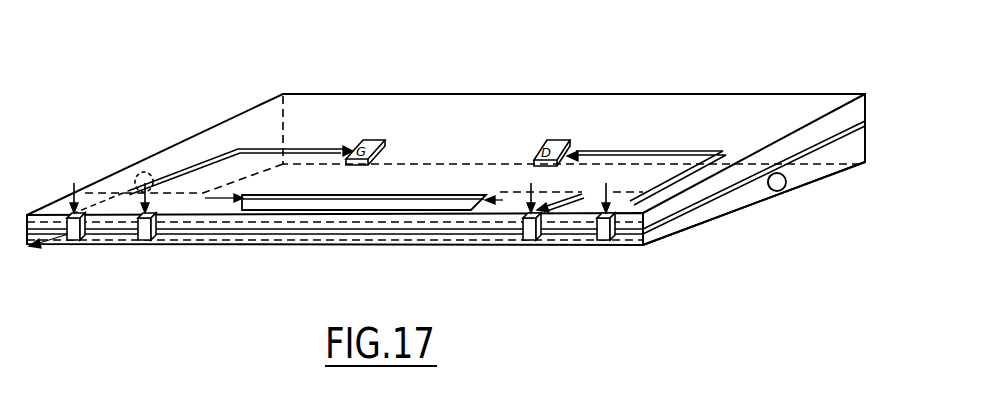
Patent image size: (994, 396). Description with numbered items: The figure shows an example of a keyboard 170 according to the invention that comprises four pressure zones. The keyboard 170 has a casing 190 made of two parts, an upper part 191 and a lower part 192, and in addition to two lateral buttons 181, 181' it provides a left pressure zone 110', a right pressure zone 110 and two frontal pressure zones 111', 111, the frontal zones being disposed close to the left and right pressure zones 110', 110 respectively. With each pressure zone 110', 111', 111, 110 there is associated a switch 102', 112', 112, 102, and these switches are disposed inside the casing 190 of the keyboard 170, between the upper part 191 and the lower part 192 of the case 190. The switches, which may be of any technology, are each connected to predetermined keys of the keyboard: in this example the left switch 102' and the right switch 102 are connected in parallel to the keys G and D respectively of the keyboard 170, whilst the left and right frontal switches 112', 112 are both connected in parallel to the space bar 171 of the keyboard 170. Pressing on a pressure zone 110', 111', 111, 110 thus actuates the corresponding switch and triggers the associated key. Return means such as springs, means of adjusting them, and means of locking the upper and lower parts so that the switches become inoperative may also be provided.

The keyboard 170 is at (744, 88).
The casing 190 is at (811, 110).
The upper part of the casing 191 is at (850, 117).
The lower part of the casing 192 is at (827, 170).
The lateral button 181 is at (786, 219).
The lateral button 181' is at (125, 131).
The space bar 171 is at (375, 200).
The right switch 102 is at (618, 264).
The left switch 102' is at (61, 258).
The right frontal switch 112 is at (517, 256).
The left frontal switch 112' is at (150, 259).
The right pressure zone 110 is at (659, 233).
The left pressure zone 110' is at (59, 168).
The right frontal pressure zone 111 is at (555, 243).
The left frontal pressure zone 111' is at (174, 147).